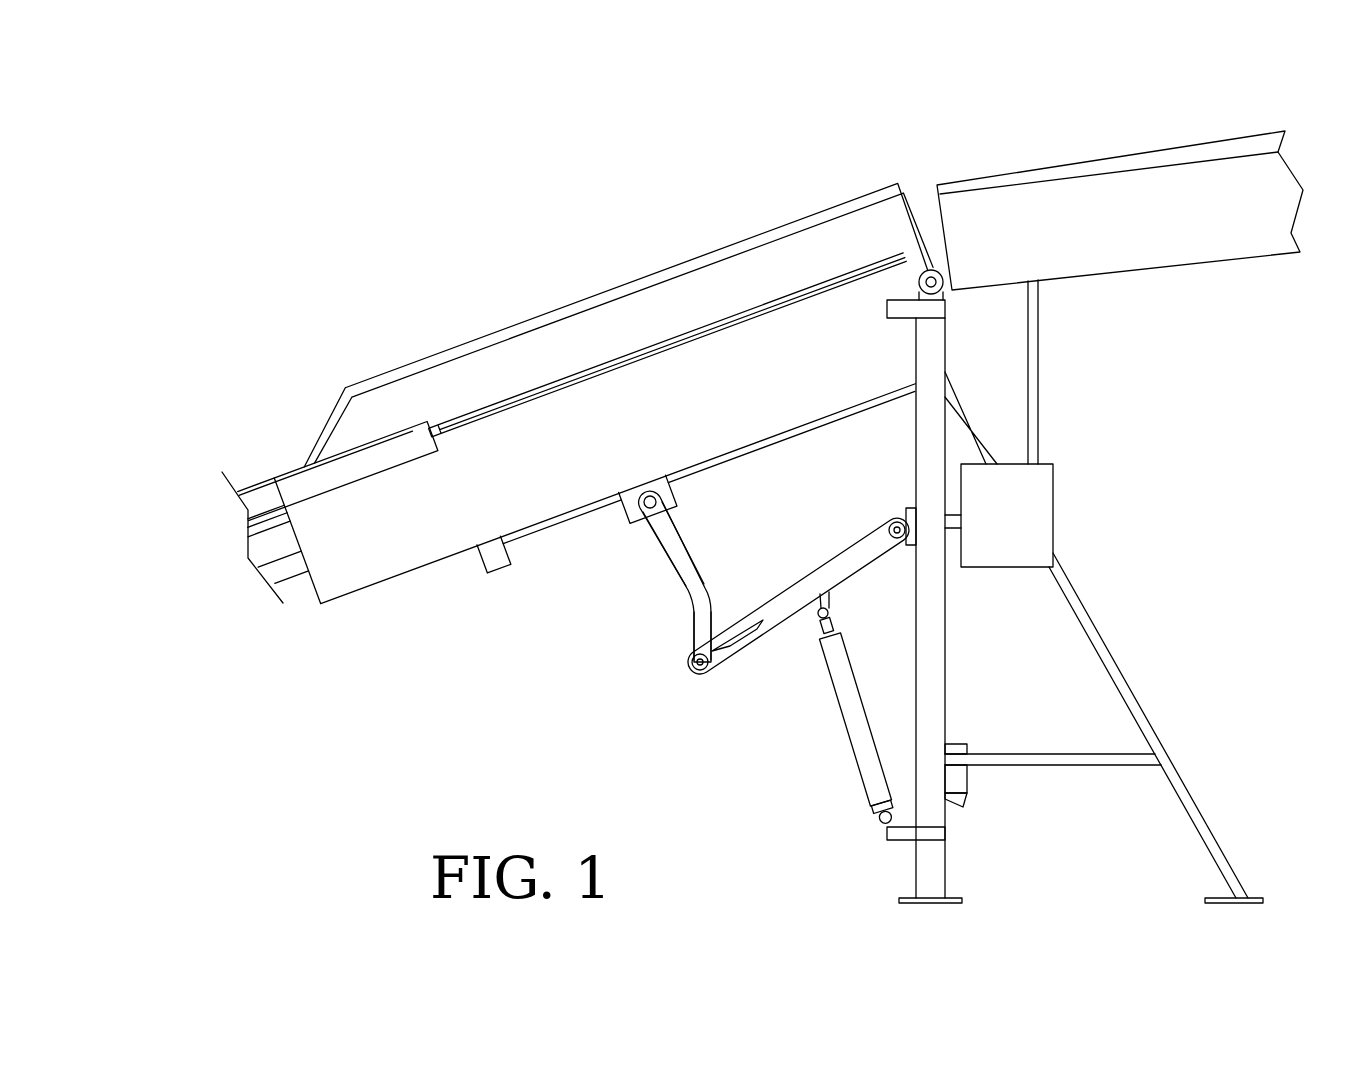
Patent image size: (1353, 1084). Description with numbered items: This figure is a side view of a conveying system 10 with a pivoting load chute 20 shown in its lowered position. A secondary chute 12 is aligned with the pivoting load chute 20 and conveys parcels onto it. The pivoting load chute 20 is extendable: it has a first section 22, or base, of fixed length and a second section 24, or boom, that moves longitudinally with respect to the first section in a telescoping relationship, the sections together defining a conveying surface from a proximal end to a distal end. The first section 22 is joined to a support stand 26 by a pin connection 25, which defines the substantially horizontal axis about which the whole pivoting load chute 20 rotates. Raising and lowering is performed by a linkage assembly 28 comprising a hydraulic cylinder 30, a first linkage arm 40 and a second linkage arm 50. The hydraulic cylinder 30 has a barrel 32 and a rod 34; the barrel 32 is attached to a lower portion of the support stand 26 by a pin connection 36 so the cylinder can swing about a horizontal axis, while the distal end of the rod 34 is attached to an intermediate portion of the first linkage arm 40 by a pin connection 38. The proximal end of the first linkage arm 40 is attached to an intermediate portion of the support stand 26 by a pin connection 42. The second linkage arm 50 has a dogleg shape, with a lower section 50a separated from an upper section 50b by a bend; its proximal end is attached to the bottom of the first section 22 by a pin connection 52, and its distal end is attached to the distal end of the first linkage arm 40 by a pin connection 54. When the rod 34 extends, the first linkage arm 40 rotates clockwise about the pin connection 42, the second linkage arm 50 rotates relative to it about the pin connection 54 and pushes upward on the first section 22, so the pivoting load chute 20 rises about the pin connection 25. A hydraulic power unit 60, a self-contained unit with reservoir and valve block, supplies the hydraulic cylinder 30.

The conveying system 10 is at (218, 218).
The secondary chute 12 is at (1164, 154).
The pivoting load chute 20 is at (387, 583).
The first section 22 is at (641, 278).
The second section 24 is at (248, 560).
The pin connection 25 is at (942, 268).
The support stand 26 is at (947, 822).
The linkage assembly 28 is at (742, 745).
The hydraulic cylinder 30 is at (845, 732).
The barrel 32 is at (867, 788).
The rod 34 is at (820, 627).
The pin connection 36 is at (880, 824).
The pin connection 38 is at (833, 608).
The first linkage arm 40 is at (813, 577).
The pin connection 42 is at (893, 522).
The second linkage arm 50 is at (697, 567).
The lower section 50a is at (690, 640).
The upper section 50b is at (647, 523).
The pin connection 52 is at (664, 503).
The pin connection 54 is at (700, 673).
The hydraulic power unit 60 is at (967, 747).